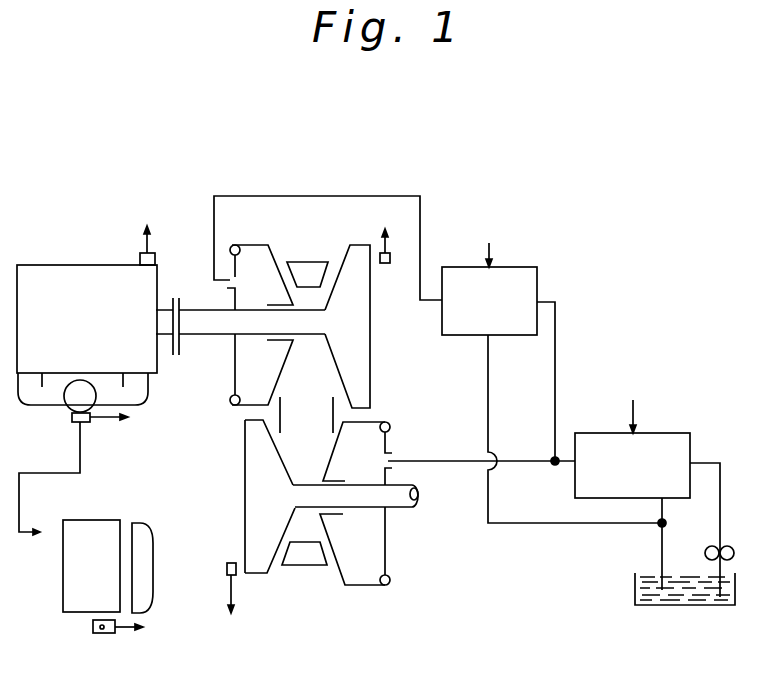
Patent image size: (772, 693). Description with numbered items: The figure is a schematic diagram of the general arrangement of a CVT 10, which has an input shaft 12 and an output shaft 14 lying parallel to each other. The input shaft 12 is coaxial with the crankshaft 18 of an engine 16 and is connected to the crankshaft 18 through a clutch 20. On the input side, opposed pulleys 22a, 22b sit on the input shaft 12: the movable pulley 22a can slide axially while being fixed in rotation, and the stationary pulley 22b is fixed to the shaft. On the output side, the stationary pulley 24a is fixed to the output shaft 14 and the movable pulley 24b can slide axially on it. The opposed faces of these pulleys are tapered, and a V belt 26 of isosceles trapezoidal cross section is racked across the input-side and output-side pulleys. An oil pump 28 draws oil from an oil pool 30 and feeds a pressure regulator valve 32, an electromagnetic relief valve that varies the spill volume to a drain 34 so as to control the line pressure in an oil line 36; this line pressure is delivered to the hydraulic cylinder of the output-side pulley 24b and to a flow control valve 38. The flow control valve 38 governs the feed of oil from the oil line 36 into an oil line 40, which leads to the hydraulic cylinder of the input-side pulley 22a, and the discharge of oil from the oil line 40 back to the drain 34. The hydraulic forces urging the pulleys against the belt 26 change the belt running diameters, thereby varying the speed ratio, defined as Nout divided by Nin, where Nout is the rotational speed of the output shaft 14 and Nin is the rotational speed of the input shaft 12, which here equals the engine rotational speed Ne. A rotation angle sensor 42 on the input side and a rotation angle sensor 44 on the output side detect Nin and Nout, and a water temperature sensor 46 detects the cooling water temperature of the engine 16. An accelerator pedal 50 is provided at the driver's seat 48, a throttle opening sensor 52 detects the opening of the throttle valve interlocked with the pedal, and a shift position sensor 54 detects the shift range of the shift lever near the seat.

The CVT 10 is at (328, 208).
The input shaft 12 is at (200, 328).
The output shaft 14 is at (398, 498).
The engine 16 is at (62, 287).
The crankshaft 18 is at (163, 334).
The clutch 20 is at (176, 302).
The movable pulley on the input side 22a is at (253, 260).
The stationary pulley on the input side 22b is at (363, 385).
The stationary pulley on the output side 24a is at (255, 577).
The movable pulley on the output side 24b is at (363, 580).
The belt 26 is at (310, 270).
The oil pump 28 is at (735, 552).
The oil pool 30 is at (688, 607).
The pressure regulator valve 32 is at (668, 438).
The drain 34 is at (660, 551).
The oil line 36 is at (555, 395).
The flow control valve 38 is at (517, 277).
The oil line 40 is at (425, 227).
The rotation angle sensor on the input side 42 is at (384, 263).
The rotation angle sensor on the output side 44 is at (227, 568).
The water temperature sensor 46 is at (140, 262).
The driver's seat 48 is at (90, 537).
The accelerator pedal 50 is at (38, 532).
The throttle opening sensor 52 is at (75, 423).
The shift position sensor 54 is at (105, 633).
The engine rotational speed Ne is at (163, 307).
The rotational speed of the input shaft Nin is at (220, 330).
The rotational speed of the output shaft Nout is at (408, 498).